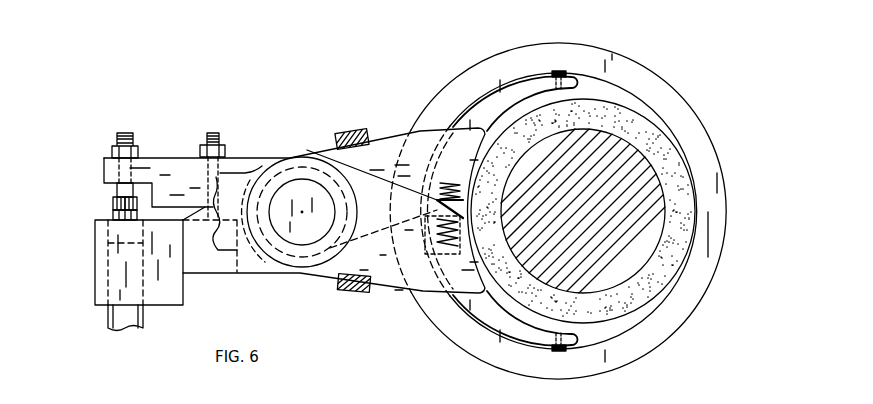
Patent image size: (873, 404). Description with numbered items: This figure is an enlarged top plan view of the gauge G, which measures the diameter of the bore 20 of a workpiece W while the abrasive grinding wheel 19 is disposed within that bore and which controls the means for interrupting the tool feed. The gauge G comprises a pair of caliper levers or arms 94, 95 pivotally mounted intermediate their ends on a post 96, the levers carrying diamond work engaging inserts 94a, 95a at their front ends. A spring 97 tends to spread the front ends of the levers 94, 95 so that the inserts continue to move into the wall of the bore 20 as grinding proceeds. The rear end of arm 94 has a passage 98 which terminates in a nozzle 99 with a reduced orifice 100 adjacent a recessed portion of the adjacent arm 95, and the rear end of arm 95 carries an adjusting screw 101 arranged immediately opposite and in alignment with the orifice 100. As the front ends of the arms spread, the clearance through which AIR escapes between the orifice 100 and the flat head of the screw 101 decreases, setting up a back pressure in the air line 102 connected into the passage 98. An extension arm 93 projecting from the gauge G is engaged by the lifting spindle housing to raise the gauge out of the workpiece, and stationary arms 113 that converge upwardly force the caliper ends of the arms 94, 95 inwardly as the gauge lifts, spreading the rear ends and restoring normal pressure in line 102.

The workpiece W is at (620, 66).
The bore 20 is at (647, 100).
The abrasive grinding wheel 19 is at (671, 142).
The gauge G is at (250, 144).
The caliper lever 94 is at (397, 132).
The caliper lever 95 is at (378, 290).
The diamond work engaging insert 94a is at (558, 72).
The diamond work engaging insert 95a is at (558, 350).
The post 96 is at (290, 238).
The spring 97 is at (430, 257).
The stationary arms 113 is at (352, 131).
The extension arm 93 is at (222, 248).
The passage 98 is at (98, 275).
The nozzle 99 is at (112, 215).
The orifice 100 is at (128, 223).
The adjusting screw 101 is at (115, 201).
The air AIR is at (113, 207).
The air line 102 is at (112, 317).